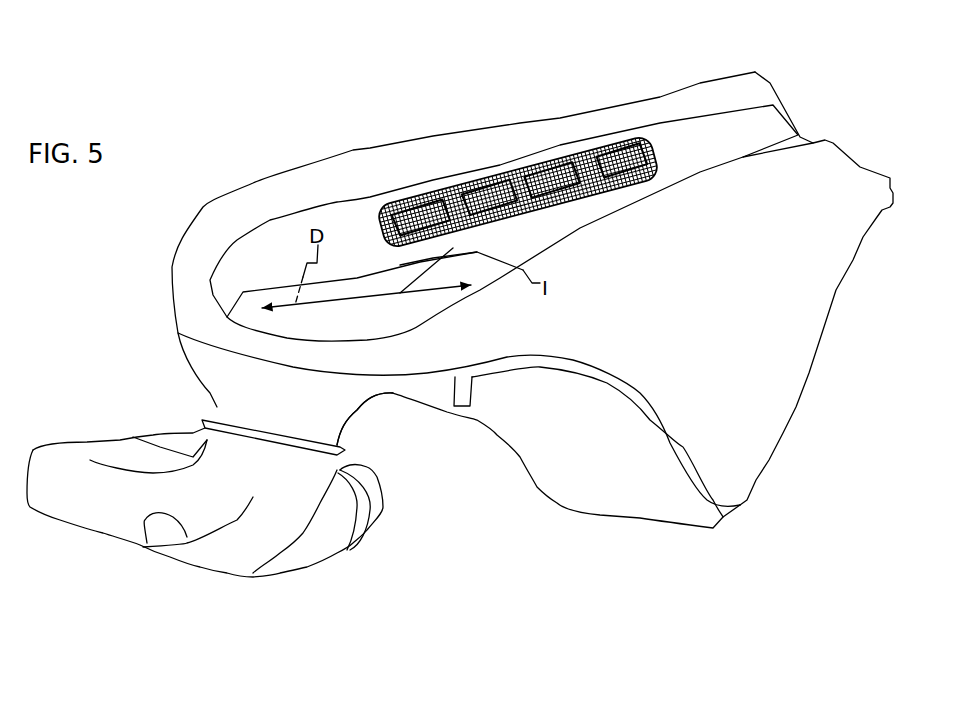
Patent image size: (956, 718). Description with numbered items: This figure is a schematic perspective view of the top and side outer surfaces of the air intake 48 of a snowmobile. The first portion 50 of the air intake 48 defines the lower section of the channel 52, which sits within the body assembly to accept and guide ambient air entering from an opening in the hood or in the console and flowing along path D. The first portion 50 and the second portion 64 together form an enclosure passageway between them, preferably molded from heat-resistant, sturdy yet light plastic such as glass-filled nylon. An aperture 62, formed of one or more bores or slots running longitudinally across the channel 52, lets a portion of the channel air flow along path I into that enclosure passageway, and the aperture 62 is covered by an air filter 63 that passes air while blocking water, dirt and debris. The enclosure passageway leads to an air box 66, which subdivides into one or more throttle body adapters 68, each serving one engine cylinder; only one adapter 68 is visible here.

The air intake 48 is at (265, 121).
The first portion 50 is at (363, 323).
The channel 52 is at (390, 318).
The aperture 62 is at (513, 183).
The air filter 63 is at (465, 212).
The second portion 64 is at (640, 507).
The air box 66 is at (240, 553).
The throttle body adapter 68 is at (366, 555).